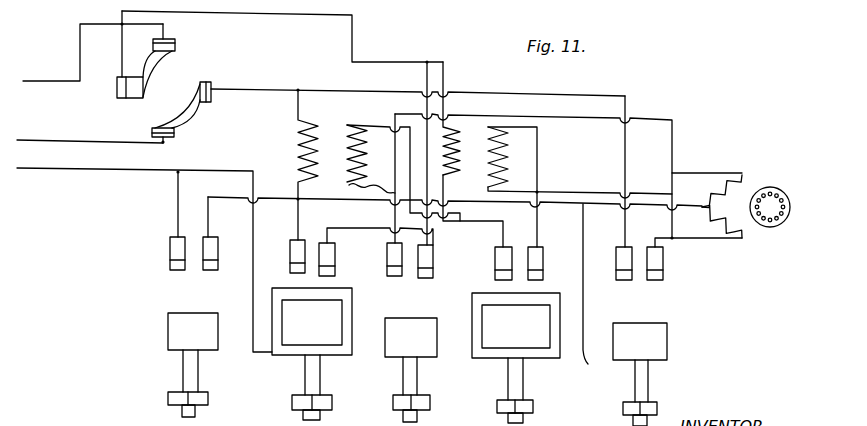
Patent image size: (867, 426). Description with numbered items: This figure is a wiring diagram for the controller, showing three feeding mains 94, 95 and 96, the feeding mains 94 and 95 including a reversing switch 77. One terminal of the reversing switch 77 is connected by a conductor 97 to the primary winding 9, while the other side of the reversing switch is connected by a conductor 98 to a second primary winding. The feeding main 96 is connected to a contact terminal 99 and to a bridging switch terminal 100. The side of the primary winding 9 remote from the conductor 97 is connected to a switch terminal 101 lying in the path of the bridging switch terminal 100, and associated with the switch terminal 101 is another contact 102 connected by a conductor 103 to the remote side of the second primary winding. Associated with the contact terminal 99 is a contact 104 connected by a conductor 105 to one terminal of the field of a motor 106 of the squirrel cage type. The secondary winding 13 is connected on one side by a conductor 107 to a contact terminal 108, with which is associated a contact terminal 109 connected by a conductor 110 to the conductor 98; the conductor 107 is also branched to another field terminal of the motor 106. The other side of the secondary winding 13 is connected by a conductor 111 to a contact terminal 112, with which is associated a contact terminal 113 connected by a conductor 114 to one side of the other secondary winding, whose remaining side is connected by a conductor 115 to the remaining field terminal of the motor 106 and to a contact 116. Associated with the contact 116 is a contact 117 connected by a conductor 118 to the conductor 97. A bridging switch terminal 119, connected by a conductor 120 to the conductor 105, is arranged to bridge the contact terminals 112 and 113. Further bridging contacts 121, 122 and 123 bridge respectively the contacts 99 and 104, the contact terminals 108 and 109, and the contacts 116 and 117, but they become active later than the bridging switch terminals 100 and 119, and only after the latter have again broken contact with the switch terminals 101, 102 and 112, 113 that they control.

The primary winding 9 is at (298, 150).
The secondary winding 13 is at (367, 152).
The reversing switch 77 is at (164, 77).
The feeding main 94 is at (51, 76).
The feeding main 95 is at (56, 141).
The feeding main 96 is at (55, 172).
The conductor 97 is at (247, 89).
The conductor 98 is at (352, 38).
The contact terminal 99 is at (170, 252).
The bridging switch terminal 100 is at (312, 354).
The switch terminal 101 is at (290, 256).
The contact 102 is at (340, 249).
The conductor 103 is at (364, 228).
The contact 104 is at (222, 251).
The conductor 105 is at (228, 193).
The motor 106 is at (760, 176).
The conductor 107 is at (520, 117).
The contact terminal 108 is at (387, 263).
The contact terminal 109 is at (434, 257).
The conductor 110 is at (427, 78).
The conductor 111 is at (467, 221).
The contact terminal 112 is at (492, 262).
The contact terminal 113 is at (543, 258).
The conductor 114 is at (537, 170).
The conductor 115 is at (590, 192).
The contact 116 is at (664, 260).
The contact 117 is at (620, 282).
The conductor 118 is at (627, 98).
The bridging switch terminal 119 is at (516, 358).
The conductor 120 is at (588, 297).
The bridging contact 121 is at (193, 365).
The bridging contact 122 is at (411, 370).
The bridging contact 123 is at (640, 374).